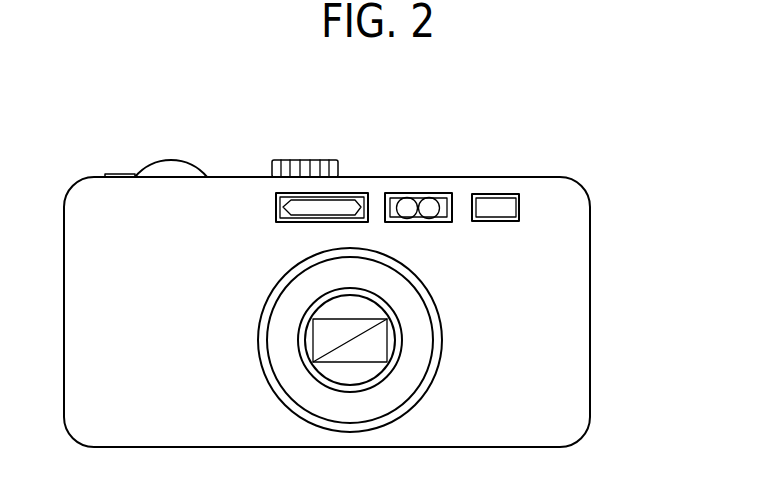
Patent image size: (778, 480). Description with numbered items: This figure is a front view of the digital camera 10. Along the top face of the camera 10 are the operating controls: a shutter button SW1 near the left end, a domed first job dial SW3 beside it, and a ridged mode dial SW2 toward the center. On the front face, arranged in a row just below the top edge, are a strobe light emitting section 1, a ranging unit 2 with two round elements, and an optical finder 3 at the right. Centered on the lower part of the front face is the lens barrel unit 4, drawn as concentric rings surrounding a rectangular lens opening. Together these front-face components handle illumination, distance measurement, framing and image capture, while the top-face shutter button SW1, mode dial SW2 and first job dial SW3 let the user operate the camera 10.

The digital camera 10 is at (673, 298).
The strobe light emitting section 1 is at (350, 193).
The ranging unit 2 is at (427, 193).
The optical finder 3 is at (519, 206).
The lens barrel unit 4 is at (437, 327).
The shutter button SW1 is at (116, 174).
The mode dial SW2 is at (327, 160).
The first job dial SW3 is at (167, 160).